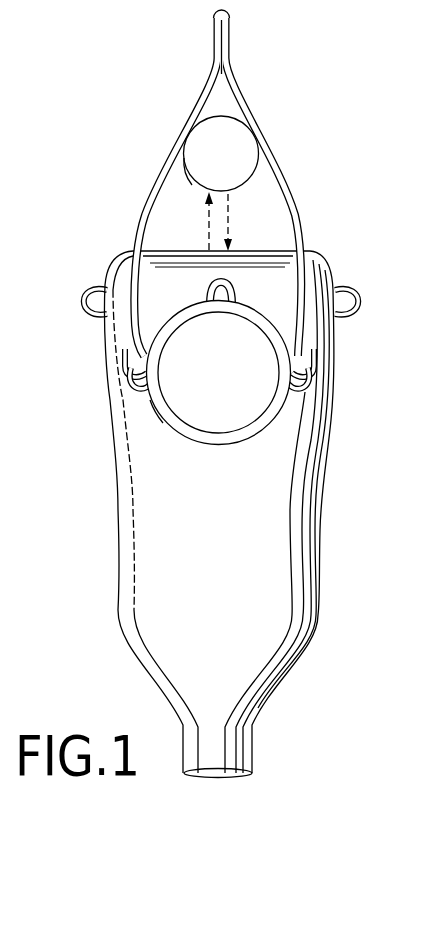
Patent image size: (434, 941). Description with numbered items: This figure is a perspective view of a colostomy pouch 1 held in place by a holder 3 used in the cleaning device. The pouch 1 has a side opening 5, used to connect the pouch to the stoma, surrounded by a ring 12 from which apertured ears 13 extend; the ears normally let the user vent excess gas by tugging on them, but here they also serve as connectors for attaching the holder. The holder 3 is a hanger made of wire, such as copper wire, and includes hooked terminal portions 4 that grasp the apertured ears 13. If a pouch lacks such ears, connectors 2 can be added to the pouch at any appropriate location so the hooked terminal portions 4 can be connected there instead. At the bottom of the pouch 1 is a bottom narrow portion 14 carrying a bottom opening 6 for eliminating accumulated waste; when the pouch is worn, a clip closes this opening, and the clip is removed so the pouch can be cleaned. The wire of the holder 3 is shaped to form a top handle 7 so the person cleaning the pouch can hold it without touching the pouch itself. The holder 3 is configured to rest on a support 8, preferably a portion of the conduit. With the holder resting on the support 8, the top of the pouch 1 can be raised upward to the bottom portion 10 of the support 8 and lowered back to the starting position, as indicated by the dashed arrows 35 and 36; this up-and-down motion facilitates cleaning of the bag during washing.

The colostomy pouch 1 is at (318, 503).
The connectors 2 is at (84, 303).
The holder 3 is at (303, 230).
The hooked terminal portions 4 is at (123, 352).
The side opening 5 is at (163, 423).
The bottom opening 6 is at (213, 777).
The top handle 7 is at (230, 40).
The support 8 is at (258, 160).
The bottom portion of support 10 is at (192, 185).
The ring 12 is at (270, 438).
The apertured ears 13 is at (127, 387).
The bottom narrow portion 14 is at (252, 737).
The dashed arrow 35 is at (229, 217).
The dashed arrow 36 is at (208, 232).